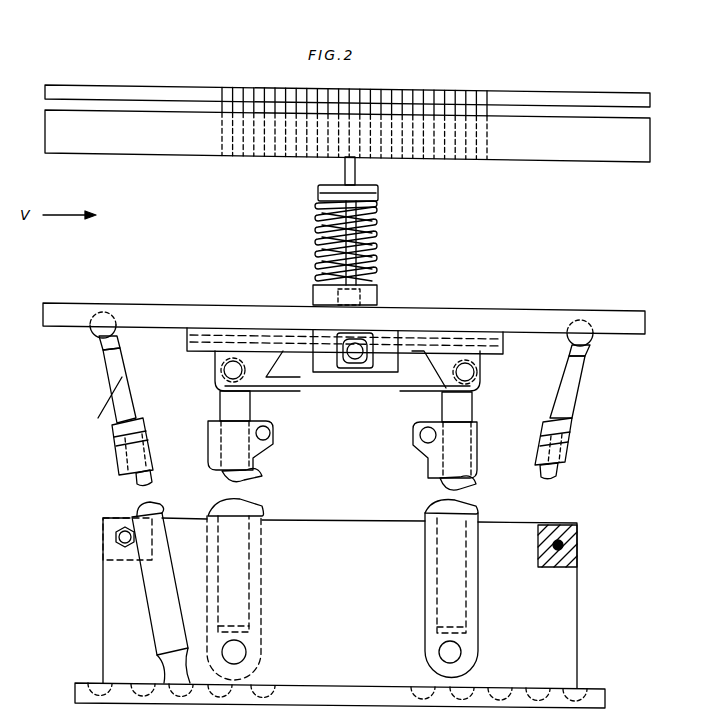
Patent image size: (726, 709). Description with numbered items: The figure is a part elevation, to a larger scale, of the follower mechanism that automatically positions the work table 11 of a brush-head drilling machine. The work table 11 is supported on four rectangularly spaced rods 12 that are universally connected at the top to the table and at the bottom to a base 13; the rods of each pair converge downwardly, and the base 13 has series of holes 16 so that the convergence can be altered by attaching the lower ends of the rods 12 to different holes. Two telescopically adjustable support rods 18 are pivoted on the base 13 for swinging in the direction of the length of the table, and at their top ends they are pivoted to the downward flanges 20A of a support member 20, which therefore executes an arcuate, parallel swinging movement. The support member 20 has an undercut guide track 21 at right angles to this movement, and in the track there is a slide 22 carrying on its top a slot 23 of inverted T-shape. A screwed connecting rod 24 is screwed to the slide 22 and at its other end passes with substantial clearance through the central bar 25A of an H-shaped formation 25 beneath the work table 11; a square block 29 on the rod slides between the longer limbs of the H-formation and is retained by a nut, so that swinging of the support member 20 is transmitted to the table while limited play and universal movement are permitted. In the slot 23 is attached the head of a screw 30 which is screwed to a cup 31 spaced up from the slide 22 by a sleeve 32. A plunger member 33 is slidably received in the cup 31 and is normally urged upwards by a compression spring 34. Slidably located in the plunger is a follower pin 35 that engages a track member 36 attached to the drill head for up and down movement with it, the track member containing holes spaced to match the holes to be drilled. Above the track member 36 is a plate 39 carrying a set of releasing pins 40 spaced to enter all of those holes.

The work table 11 is at (548, 312).
The rods 12 is at (134, 403).
The base 13 is at (603, 694).
The holes 16 is at (250, 684).
The support rods 18 is at (250, 411).
The support member 20 is at (408, 387).
The downward flanges 20A is at (478, 383).
The guide track 21 is at (277, 372).
The slide 22 is at (400, 363).
The slot 23 is at (493, 325).
The screwed connecting rod 24 is at (357, 362).
The H-shaped formation 25 is at (405, 335).
The central bar 25A is at (345, 372).
The square block 29 is at (330, 362).
The screw 30 is at (378, 284).
The cup 31 is at (375, 246).
The sleeve 32 is at (380, 350).
The plunger member 33 is at (378, 215).
The compression spring 34 is at (318, 240).
The follower pin 35 is at (356, 172).
The track member 36 is at (652, 139).
The plate 39 is at (650, 97).
The releasing pins 40 is at (468, 110).